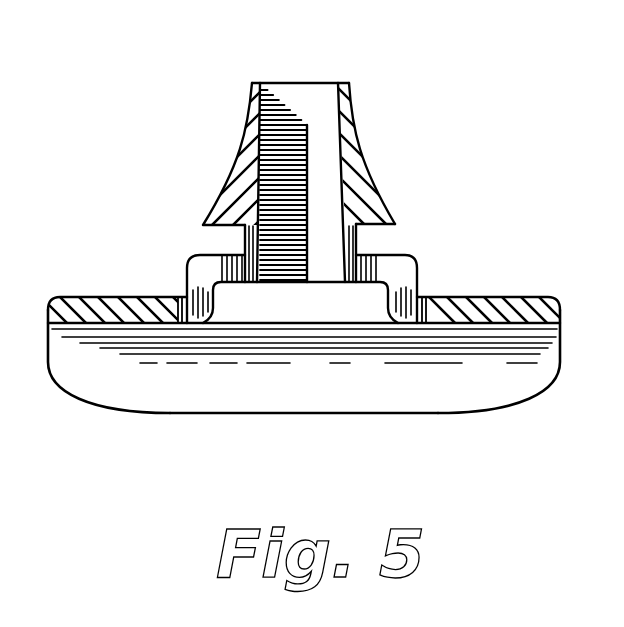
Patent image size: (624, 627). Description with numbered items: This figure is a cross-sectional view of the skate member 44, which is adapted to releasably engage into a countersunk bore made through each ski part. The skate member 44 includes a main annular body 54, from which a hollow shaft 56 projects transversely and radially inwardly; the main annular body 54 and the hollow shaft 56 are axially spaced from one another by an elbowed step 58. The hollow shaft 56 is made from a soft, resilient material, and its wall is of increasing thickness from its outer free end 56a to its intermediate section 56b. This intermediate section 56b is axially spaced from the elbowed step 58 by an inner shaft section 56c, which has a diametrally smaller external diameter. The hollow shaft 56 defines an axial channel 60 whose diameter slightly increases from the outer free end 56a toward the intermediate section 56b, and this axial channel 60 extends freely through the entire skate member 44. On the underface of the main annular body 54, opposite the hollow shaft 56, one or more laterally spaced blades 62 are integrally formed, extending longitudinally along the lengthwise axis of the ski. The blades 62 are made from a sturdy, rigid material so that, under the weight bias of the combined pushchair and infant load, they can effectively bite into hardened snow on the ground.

The skate member 44 is at (153, 413).
The main annular body 54 is at (106, 308).
The hollow shaft 56 is at (232, 188).
The outer free end 56a is at (348, 83).
The intermediate section 56b is at (388, 221).
The inner shaft section 56c is at (243, 242).
The elbowed step 58 is at (392, 268).
The axial channel 60 is at (308, 113).
The blades 62 is at (480, 382).